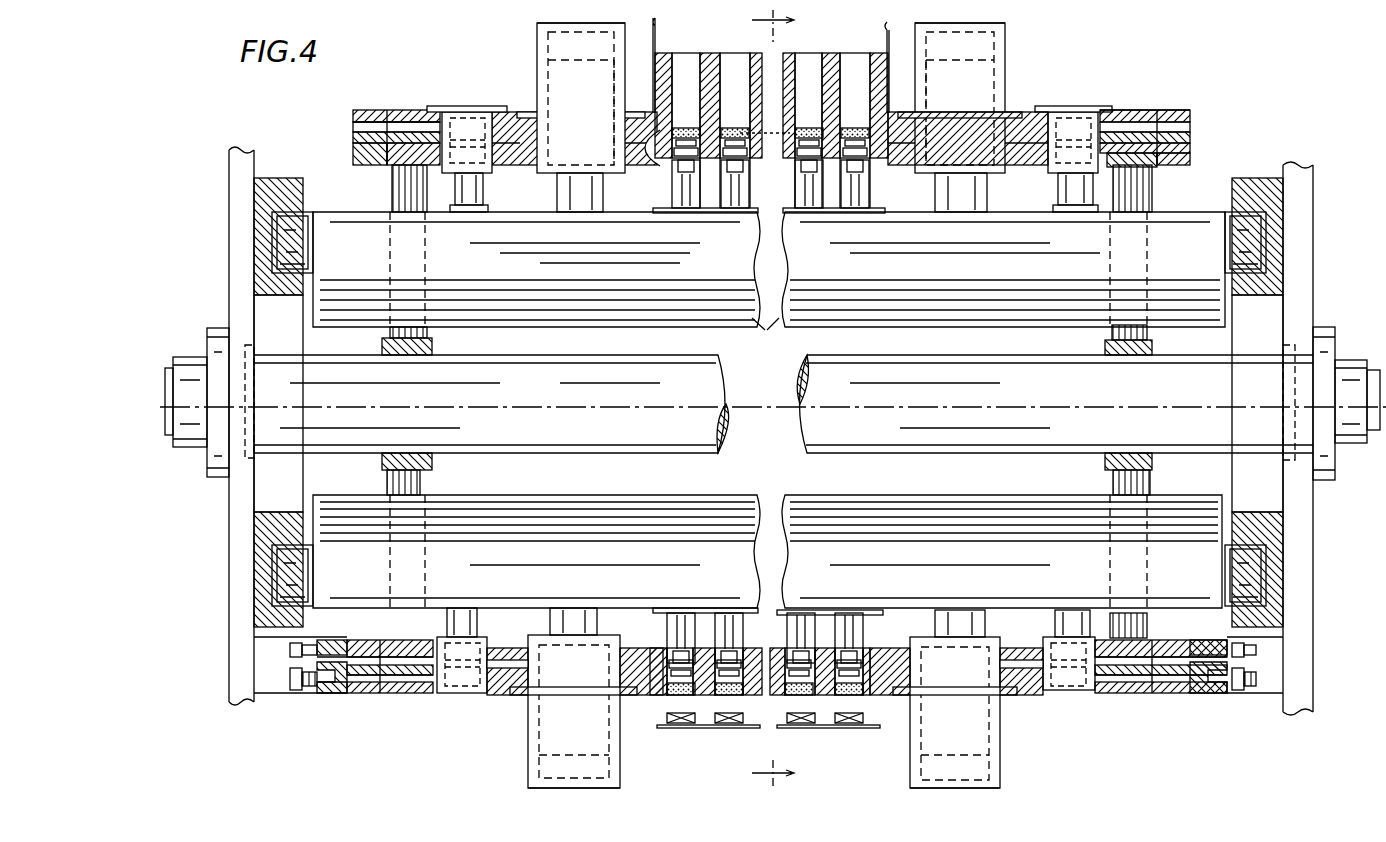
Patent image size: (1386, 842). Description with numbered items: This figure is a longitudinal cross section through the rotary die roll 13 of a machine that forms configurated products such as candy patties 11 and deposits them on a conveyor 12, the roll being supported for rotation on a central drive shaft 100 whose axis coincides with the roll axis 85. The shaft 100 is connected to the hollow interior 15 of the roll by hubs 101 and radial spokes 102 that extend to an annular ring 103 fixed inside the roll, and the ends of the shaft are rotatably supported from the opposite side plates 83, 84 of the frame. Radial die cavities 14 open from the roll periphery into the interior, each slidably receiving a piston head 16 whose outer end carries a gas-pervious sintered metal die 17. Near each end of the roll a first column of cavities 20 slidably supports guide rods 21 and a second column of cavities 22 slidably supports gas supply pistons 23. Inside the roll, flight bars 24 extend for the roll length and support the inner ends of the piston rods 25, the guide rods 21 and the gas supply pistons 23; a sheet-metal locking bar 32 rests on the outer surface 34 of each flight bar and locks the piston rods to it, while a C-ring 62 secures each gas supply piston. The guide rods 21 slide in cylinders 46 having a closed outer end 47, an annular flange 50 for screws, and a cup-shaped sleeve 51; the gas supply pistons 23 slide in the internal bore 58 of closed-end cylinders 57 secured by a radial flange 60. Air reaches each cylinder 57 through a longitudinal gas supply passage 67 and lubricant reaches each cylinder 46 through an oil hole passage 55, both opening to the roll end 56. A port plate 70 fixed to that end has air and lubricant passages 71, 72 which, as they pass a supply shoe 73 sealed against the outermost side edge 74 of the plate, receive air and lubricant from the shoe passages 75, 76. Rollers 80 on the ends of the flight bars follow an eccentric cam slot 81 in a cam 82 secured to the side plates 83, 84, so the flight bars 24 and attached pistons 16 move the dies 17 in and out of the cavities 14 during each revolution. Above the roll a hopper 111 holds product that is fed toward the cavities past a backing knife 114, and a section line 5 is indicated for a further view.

The section line 5- 5 is at (787, 403).
The candy patties 11 is at (680, 728).
The conveyor 12 is at (735, 728).
The rotary die roll 13 is at (1137, 122).
The die cavities 14 is at (682, 118).
The hollow interior 15 is at (903, 200).
The piston heads 16 is at (732, 118).
The sintered metal die 17 is at (775, 706).
The guide rod cavities 20 is at (646, 150).
The guide rods 21 is at (583, 200).
The gas supply cavities 22 is at (480, 118).
The gas supply pistons 23 is at (467, 210).
The flight bars 24 is at (765, 332).
The piston rods 25 is at (800, 188).
The locking bar 32 is at (815, 212).
The outer surface of flight bar 34 is at (643, 212).
The cylinders 46 is at (1006, 44).
The closed outer end 47 is at (1000, 28).
The peripheral annular flange 50 is at (1010, 110).
The cup-shaped sleeve 51 is at (1000, 58).
The oil hole passage 55 is at (525, 160).
The end of die roll 56 is at (1150, 135).
The closed-end cylinder 57 is at (467, 106).
The internal bore 58 is at (495, 70).
The radial flange 60 is at (1065, 106).
The C-ring 62 is at (1075, 212).
The gas supply passage 67 is at (423, 125).
The port plate 70 is at (1188, 111).
The air passages of port plate 71 is at (350, 695).
The lubricant passages of port plate 72 is at (362, 640).
The air and lubricant supply shoe 73 is at (333, 633).
The outermost side edge of port plate 74 is at (353, 152).
The air supply passage of shoe 75 is at (1182, 694).
The lubricant supply passage of shoe 76 is at (1213, 641).
The rollers 80 is at (285, 235).
The eccentric cam slot 81 is at (1258, 298).
The cam 82 is at (280, 175).
The side plate 83 is at (239, 545).
The side plate 84 is at (1313, 535).
The axis of die roll 85 is at (666, 402).
The central drive shaft 100 is at (1055, 404).
The hubs 101 is at (410, 355).
The radial spokes 102 is at (1152, 190).
The annular ring 103 is at (392, 166).
The hopper 111 is at (660, 30).
The backing knife 114 is at (702, 54).